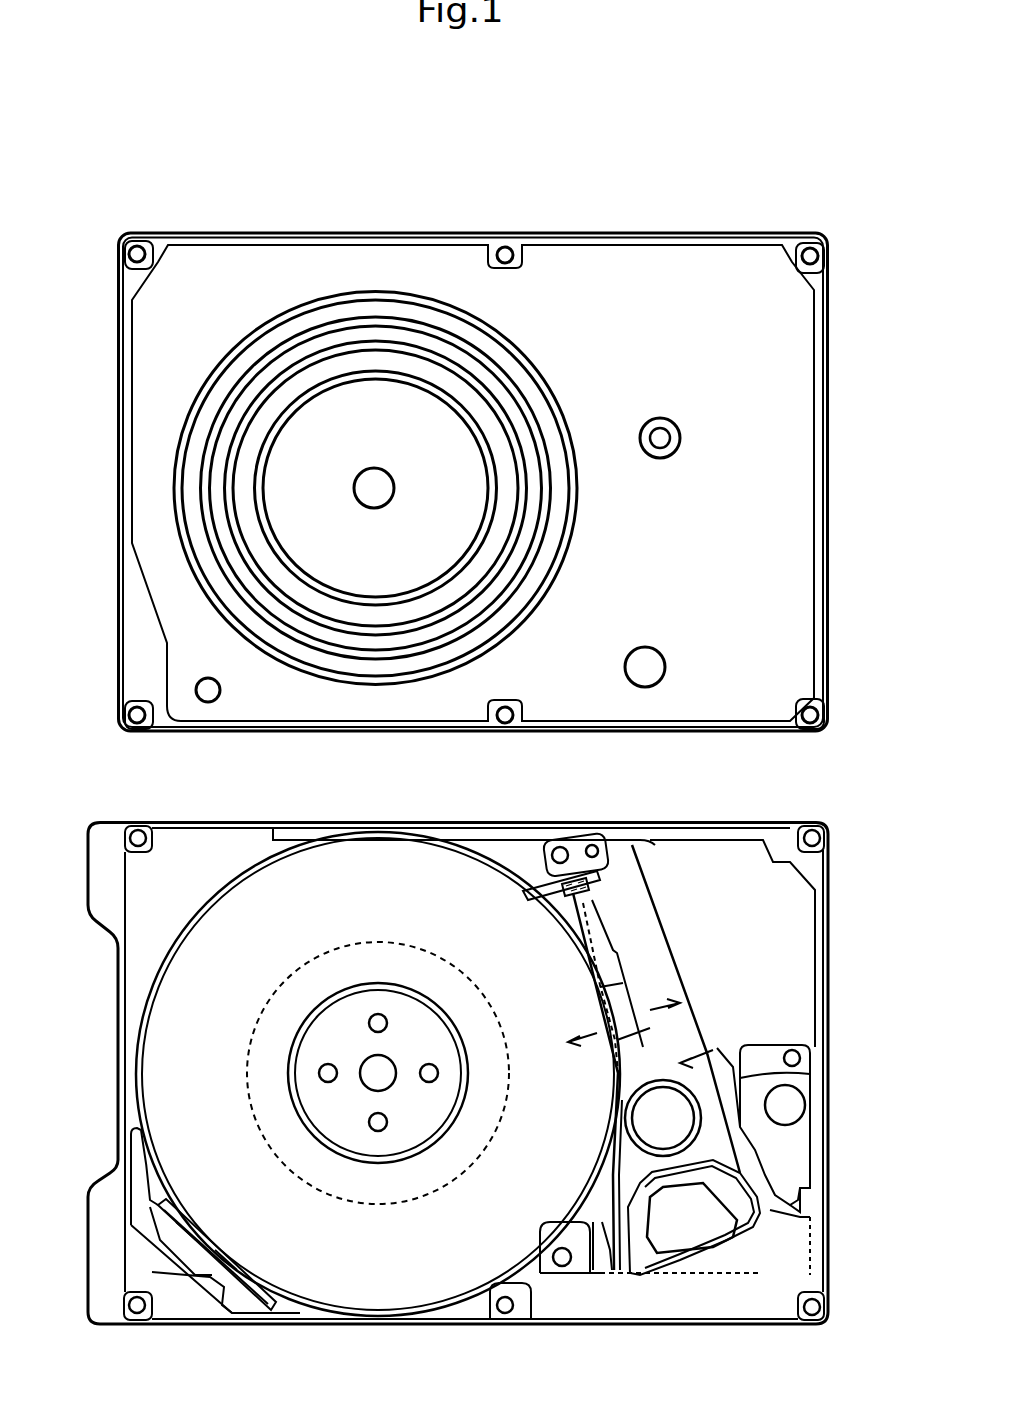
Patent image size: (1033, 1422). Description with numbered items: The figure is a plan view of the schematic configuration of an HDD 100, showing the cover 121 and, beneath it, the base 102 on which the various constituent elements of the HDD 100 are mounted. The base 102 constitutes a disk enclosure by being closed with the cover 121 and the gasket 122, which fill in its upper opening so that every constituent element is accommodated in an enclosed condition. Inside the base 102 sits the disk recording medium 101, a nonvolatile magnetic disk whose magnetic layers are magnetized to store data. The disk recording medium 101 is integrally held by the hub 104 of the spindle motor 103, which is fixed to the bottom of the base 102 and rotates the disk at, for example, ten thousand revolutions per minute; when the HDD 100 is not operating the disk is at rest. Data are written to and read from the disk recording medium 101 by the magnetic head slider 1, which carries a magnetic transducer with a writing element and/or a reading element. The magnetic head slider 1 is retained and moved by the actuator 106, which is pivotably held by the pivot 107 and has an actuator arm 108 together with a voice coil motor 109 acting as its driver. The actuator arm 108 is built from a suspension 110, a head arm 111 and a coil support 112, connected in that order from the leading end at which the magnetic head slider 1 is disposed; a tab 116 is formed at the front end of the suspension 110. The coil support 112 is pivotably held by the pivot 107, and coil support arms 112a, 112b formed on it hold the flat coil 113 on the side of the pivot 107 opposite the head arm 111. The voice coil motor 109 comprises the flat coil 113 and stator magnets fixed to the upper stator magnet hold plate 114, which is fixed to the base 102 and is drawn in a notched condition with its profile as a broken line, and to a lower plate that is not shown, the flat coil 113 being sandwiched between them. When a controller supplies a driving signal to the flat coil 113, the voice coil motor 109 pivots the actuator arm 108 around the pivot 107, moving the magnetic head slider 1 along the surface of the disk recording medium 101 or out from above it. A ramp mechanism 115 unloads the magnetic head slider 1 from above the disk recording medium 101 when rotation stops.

The magnetic head slider 1 is at (590, 895).
The HDD 100 is at (886, 801).
The disk recording medium 101 is at (440, 1292).
The base 102 is at (155, 1272).
The spindle motor 103 is at (270, 1058).
The hub 104 is at (397, 1142).
The actuator 106 is at (755, 1076).
The pivot 107 is at (648, 1122).
The actuator arm 108 is at (708, 1065).
The voice coil motor (VCM) 109 is at (672, 1305).
The suspension 110 is at (597, 934).
The head arm 111 is at (667, 1038).
The coil support 112 is at (592, 1168).
The coil support arm 112a is at (618, 1274).
The coil support arm 112b is at (800, 1218).
The flat coil 113 is at (710, 1250).
The upper stator magnet hold plate 114 is at (795, 1164).
The ramp mechanism 115 is at (545, 835).
The tab 116 is at (566, 904).
The cover 121 is at (228, 298).
The gasket 122 is at (394, 238).